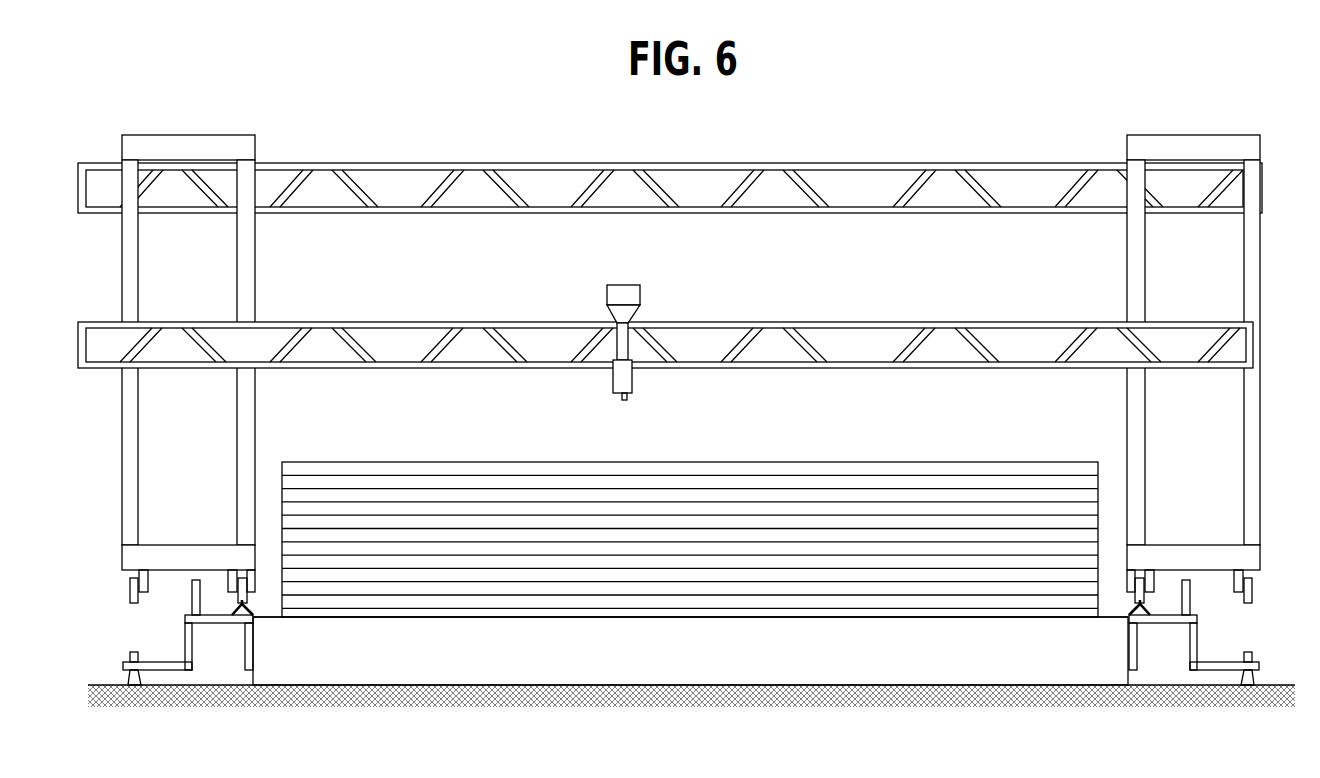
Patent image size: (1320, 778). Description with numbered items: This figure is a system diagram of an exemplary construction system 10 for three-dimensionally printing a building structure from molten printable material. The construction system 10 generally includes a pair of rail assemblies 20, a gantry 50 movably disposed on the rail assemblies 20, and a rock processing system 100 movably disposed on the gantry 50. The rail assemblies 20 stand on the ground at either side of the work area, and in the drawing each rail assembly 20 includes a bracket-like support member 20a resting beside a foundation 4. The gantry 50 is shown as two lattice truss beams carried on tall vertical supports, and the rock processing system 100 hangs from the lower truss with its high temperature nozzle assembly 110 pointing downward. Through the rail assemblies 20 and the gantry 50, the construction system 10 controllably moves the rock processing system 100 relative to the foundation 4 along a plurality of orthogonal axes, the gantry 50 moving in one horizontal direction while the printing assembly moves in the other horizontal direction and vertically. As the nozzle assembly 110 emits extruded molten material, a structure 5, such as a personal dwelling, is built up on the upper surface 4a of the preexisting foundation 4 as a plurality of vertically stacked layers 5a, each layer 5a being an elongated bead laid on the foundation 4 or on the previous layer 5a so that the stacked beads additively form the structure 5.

The construction system 10 is at (226, 72).
The gantry 50 is at (461, 122).
The rock processing system 100 is at (600, 383).
The nozzle assembly 110 is at (628, 397).
The structure 5 is at (327, 460).
The vertically stacked layers 5a is at (282, 469).
The foundation 4 is at (502, 690).
The top surface of base 4a is at (562, 615).
The rail assemblies 20 is at (173, 632).
The leg vertical member 20a is at (237, 650).